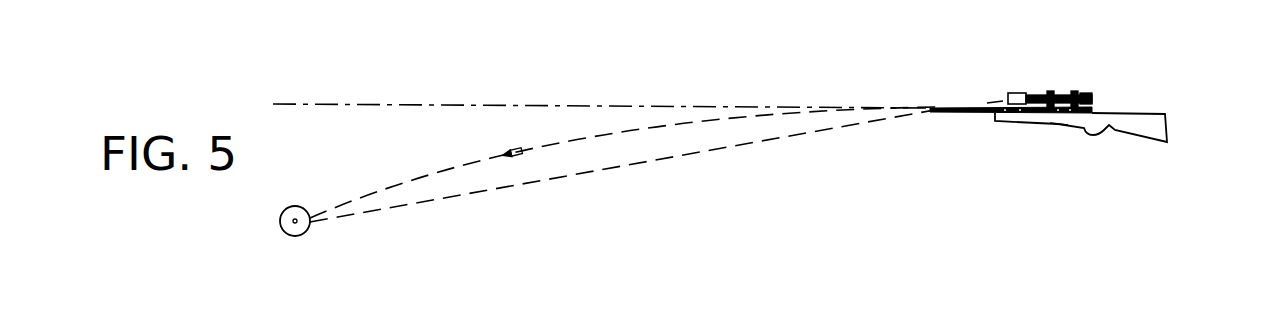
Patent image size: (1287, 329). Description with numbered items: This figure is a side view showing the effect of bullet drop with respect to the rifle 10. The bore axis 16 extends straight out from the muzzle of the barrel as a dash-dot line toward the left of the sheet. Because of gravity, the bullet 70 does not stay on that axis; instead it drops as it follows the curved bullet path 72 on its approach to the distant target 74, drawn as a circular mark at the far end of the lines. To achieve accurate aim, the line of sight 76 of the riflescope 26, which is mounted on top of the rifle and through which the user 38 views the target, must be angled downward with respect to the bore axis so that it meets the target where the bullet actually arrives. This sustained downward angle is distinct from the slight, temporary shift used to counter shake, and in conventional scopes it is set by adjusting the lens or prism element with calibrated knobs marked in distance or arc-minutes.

The rifle 10 is at (1112, 141).
The bore axis 16 is at (488, 104).
The riflescope 26 is at (1056, 92).
The user 38 is at (1121, 96).
The bullet 70 is at (510, 158).
The bullet path 72 is at (406, 174).
The target 74 is at (297, 236).
The line of sight 76 is at (648, 165).